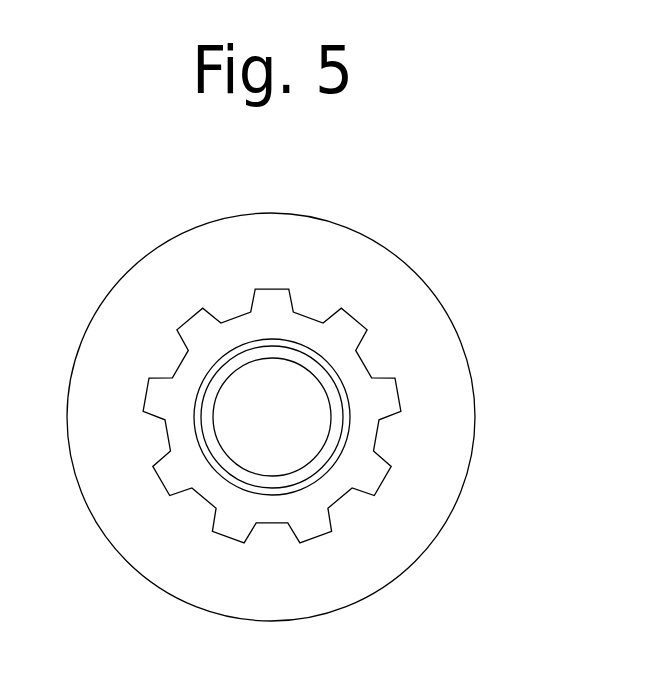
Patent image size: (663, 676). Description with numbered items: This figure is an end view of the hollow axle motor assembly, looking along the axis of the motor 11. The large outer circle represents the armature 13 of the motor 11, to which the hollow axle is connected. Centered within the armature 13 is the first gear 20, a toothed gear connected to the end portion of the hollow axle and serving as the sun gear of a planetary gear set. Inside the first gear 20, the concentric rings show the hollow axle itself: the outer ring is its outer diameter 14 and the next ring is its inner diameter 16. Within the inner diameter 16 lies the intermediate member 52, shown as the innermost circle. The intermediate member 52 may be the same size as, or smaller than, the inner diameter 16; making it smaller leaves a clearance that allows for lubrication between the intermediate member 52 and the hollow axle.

The motor 11 is at (158, 233).
The armature 13 is at (358, 230).
The first gear 20 is at (348, 329).
The outer diameter 14 is at (347, 445).
The inner diameter 16 is at (330, 459).
The intermediate member 52 is at (236, 465).